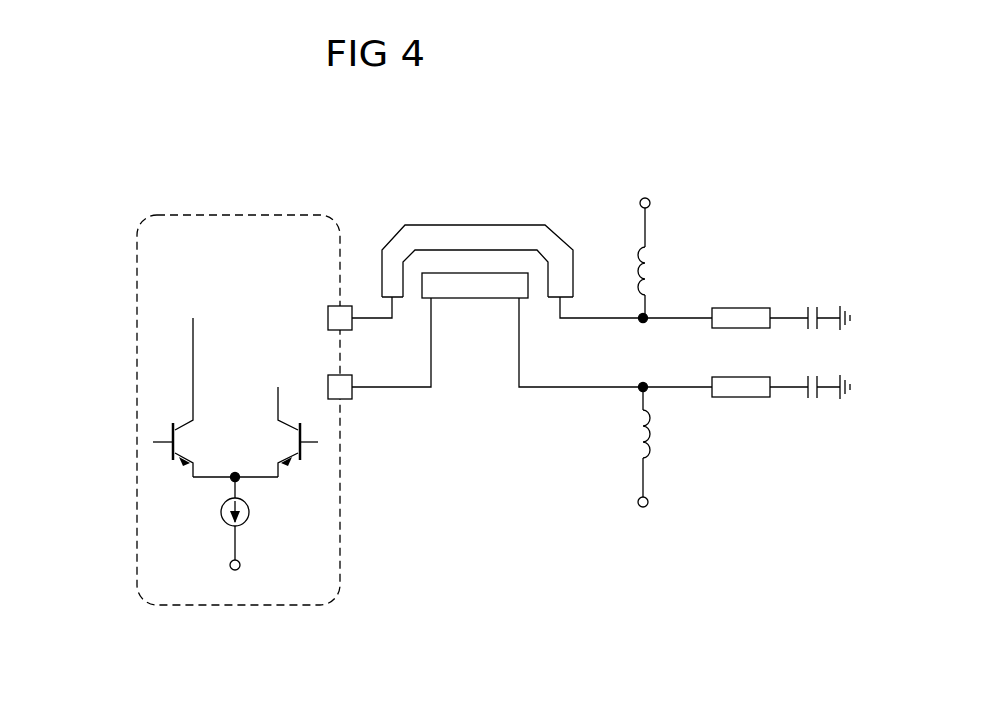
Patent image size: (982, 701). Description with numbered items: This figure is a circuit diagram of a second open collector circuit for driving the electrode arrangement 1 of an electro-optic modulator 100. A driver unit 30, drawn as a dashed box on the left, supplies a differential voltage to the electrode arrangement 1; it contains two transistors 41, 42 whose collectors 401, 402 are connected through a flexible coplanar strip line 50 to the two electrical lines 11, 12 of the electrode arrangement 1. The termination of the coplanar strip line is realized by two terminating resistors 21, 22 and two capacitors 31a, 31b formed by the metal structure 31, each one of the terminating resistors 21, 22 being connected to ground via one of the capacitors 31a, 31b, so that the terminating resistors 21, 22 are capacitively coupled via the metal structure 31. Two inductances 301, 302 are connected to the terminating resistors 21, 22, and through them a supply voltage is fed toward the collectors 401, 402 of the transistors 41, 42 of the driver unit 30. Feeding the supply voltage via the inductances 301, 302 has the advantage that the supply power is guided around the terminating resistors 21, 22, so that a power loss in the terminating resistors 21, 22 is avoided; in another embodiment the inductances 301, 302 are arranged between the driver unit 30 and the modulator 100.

The electrode arrangement 1 is at (565, 220).
The electrical line 11 is at (436, 235).
The electrical line 12 is at (483, 283).
The modulator 100 is at (481, 210).
The terminating resistor 21 is at (748, 316).
The terminating resistor 22 is at (738, 396).
The driver unit 30 is at (124, 606).
The inductance 301 is at (655, 270).
The inductance 302 is at (650, 478).
The metal structure 31 is at (851, 244).
The capacitor 31a is at (815, 305).
The capacitor 31b is at (815, 398).
The transistor 41 is at (316, 452).
The transistor 42 is at (125, 446).
The flexible coplanar strip line 50 is at (327, 300).
The collector 401 is at (183, 422).
The collector 402 is at (286, 424).